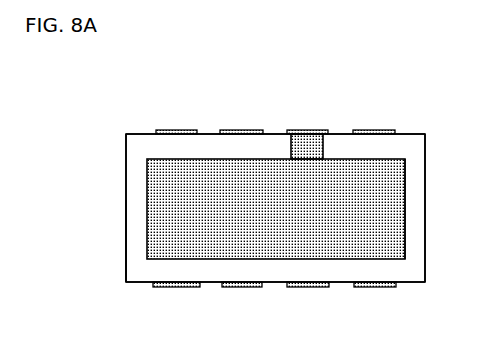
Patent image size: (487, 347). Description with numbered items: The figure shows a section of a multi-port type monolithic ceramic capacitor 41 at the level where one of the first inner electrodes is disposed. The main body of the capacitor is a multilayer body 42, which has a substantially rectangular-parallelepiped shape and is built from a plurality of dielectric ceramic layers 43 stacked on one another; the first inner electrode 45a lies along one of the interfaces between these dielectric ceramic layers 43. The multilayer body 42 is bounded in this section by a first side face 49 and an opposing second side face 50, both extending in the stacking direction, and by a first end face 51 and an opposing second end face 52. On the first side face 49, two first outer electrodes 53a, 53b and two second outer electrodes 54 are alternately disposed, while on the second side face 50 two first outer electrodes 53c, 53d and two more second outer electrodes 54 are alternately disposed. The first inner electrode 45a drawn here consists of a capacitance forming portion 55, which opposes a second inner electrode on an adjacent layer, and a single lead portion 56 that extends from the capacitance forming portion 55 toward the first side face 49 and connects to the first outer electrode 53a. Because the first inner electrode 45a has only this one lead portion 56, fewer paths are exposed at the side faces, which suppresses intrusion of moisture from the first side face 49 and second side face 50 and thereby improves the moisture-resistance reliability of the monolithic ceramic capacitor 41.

The monolithic ceramic capacitor 41 is at (259, 38).
The multilayer body 42 is at (119, 214).
The dielectric ceramic layers 43 is at (132, 244).
The first inner electrode 45a is at (414, 247).
The first side face 49 is at (208, 133).
The second side face 50 is at (269, 289).
The first end face 51 is at (125, 152).
The second end face 52 is at (427, 160).
The first outer electrode 53a is at (307, 130).
The first outer electrode 53b is at (173, 130).
The first outer electrode 53c is at (233, 289).
The first outer electrode 53d is at (372, 289).
The second outer electrodes 54 is at (244, 130).
The capacitance forming portion 55 is at (394, 214).
The lead portion 56 is at (322, 149).